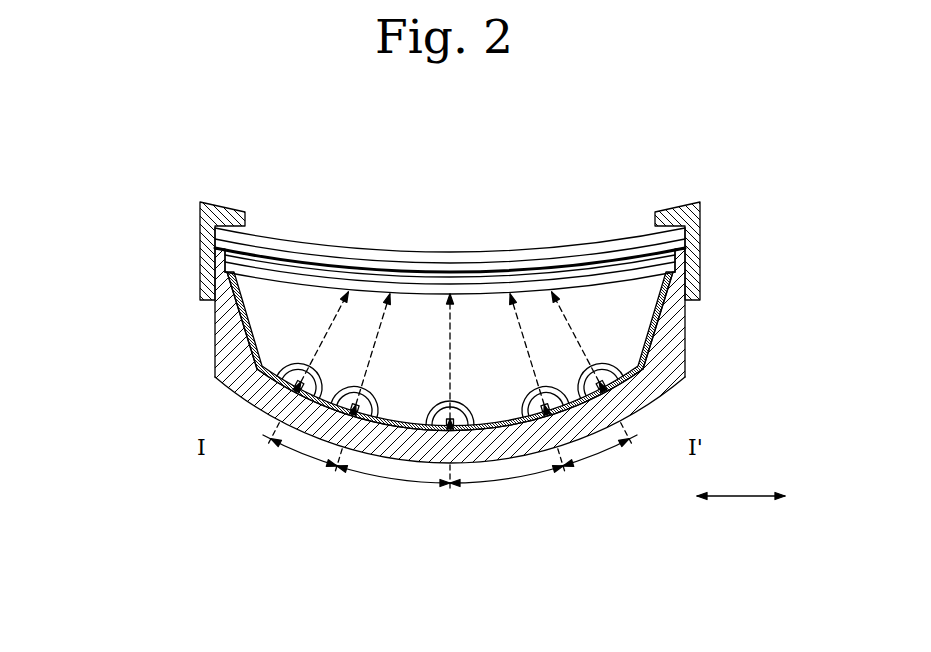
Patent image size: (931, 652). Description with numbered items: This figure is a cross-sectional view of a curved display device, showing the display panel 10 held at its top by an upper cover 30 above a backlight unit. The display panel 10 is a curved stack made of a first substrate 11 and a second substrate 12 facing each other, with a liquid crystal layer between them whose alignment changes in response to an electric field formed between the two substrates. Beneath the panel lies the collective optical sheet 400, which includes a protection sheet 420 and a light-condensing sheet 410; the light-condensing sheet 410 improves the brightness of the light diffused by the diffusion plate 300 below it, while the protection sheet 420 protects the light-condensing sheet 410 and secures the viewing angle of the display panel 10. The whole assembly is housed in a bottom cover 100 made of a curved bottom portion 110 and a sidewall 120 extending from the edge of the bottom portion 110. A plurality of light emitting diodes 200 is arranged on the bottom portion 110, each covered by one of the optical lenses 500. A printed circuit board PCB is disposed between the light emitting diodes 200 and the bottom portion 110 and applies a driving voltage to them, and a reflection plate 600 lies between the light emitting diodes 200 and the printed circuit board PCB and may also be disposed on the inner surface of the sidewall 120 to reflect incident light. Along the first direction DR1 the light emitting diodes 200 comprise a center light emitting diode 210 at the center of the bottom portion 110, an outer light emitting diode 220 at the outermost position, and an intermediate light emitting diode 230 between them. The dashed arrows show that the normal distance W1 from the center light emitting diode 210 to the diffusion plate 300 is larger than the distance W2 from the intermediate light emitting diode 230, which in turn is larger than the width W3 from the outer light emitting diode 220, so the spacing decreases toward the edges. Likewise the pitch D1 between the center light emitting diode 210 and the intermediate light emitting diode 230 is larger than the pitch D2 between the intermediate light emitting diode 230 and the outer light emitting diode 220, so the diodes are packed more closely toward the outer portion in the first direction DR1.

The display panel 10 is at (450, 203).
The first substrate 11 is at (317, 257).
The second substrate 12 is at (277, 240).
The upper cover 30 is at (700, 214).
The bottom cover 100 is at (420, 356).
The bottom portion 110 is at (258, 410).
The sidewall 120 is at (220, 327).
The light emitting diodes 200 is at (450, 475).
The center light emitting diode 210 is at (450, 430).
The outer light emitting diode 220 is at (450, 456).
The intermediate light emitting diode 230 is at (356, 417).
The diffusion plate 300 is at (417, 288).
The optical sheet 400 is at (450, 209).
The light-condensing sheet 410 is at (467, 285).
The protection sheet 420 is at (515, 276).
The optical lenses 500 is at (301, 393).
The reflection plate 600 is at (650, 330).
The printed circuit board PCB is at (625, 388).
The distance W1 is at (462, 361).
The distance W2 is at (450, 354).
The width W3 is at (450, 341).
The pitch D1 is at (450, 485).
The pitch D2 is at (450, 459).
The first direction DR1 is at (759, 495).